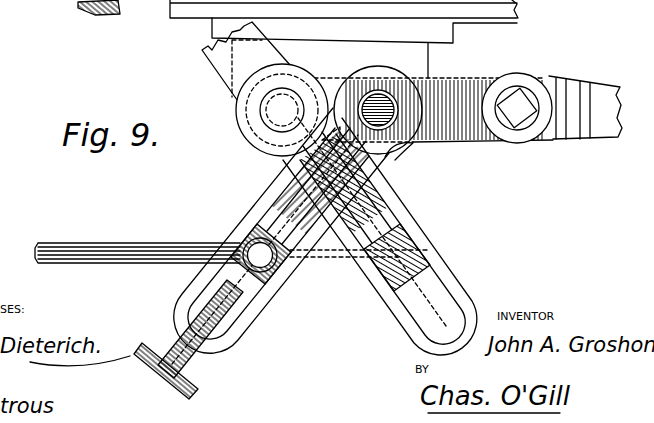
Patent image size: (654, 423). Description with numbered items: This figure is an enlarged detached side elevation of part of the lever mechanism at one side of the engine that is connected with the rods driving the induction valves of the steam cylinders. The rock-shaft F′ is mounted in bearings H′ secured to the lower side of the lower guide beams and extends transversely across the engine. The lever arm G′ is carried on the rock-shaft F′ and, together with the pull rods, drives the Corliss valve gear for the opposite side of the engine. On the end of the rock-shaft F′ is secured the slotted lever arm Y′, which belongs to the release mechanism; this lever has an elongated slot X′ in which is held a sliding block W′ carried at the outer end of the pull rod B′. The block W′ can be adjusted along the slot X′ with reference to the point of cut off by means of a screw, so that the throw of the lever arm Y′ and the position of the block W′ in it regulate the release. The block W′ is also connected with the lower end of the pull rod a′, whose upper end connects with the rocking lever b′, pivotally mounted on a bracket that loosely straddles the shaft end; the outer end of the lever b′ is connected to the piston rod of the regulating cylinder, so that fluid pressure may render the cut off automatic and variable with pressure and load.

The lever arm G′ is at (246, 64).
The bearings H′ is at (345, 62).
The rock-shaft F′ is at (282, 110).
The pull rod a′ is at (466, 72).
The rocking lever b′ is at (590, 84).
The slotted lever arm Y′ is at (414, 203).
The elongated slot X′ is at (215, 289).
The sliding block W′ is at (300, 263).
The pull rod B′ is at (118, 243).